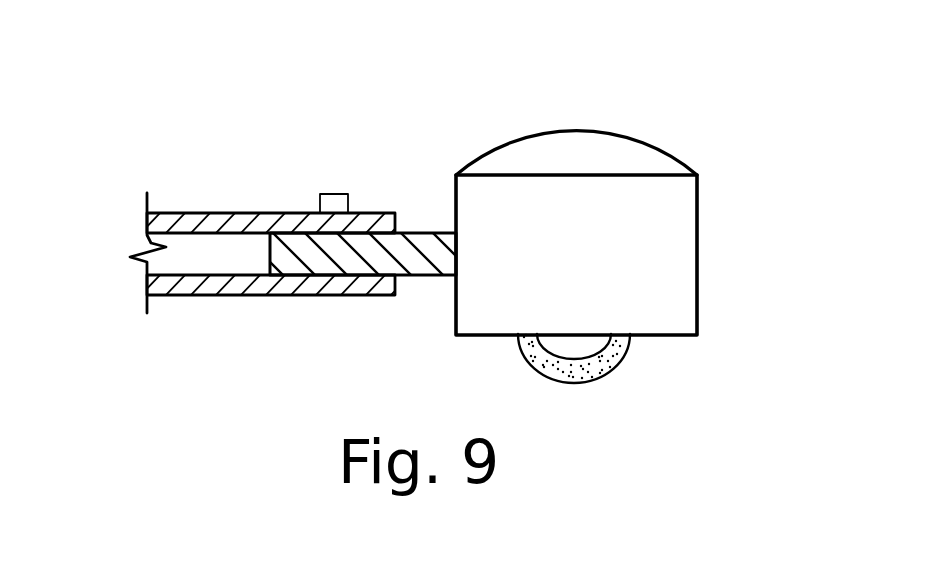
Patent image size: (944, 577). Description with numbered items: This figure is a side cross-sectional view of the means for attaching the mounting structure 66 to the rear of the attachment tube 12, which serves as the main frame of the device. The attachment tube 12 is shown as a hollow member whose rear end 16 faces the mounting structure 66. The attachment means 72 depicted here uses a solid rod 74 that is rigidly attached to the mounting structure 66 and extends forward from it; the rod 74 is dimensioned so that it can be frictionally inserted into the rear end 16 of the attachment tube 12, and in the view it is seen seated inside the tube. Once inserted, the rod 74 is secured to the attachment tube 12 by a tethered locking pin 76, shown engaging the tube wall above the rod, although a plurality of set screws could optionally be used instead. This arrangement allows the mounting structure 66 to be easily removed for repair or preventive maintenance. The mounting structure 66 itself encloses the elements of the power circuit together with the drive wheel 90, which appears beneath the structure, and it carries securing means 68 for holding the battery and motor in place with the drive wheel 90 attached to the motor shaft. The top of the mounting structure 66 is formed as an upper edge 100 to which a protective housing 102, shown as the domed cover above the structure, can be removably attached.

The attachment tube 12 is at (397, 229).
The rear end 16 is at (275, 285).
The mounting structure 66 is at (712, 231).
The securing means 68 is at (615, 291).
The attachment means 72 is at (443, 255).
The solid rod 74 is at (358, 254).
The tethered locking pin 76 is at (348, 194).
The drive wheel 90 is at (613, 368).
The upper edge 100 is at (613, 175).
The protective housing 102 is at (522, 156).